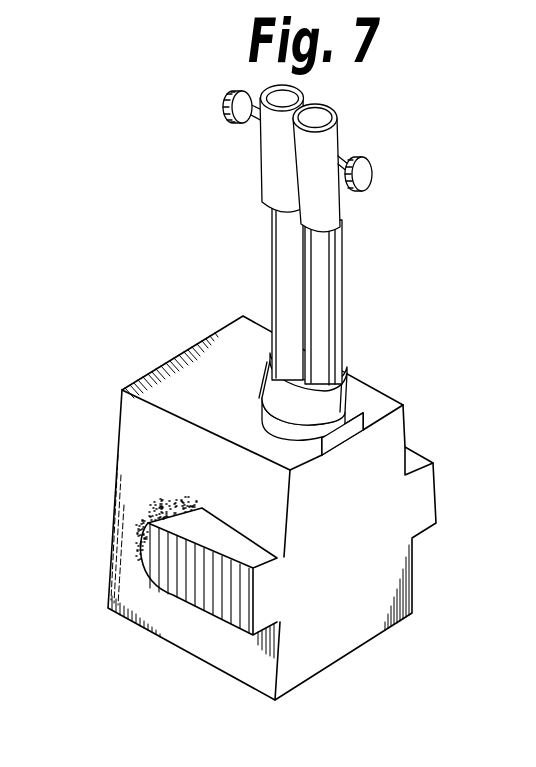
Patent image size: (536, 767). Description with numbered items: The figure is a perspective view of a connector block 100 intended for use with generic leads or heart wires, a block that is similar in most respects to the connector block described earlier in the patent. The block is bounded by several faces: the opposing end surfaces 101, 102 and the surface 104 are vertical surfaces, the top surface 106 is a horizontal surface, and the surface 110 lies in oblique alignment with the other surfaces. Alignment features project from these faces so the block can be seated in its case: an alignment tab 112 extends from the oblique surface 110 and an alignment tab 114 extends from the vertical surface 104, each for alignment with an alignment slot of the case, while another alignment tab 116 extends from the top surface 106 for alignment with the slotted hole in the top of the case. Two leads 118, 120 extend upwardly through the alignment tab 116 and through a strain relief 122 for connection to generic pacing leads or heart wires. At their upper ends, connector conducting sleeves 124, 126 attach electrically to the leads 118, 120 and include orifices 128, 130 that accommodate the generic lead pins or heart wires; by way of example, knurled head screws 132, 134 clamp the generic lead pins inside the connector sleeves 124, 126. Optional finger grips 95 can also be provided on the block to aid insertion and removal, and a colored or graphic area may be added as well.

The finger grips 95 is at (224, 612).
The connector block 100 is at (382, 207).
The end surface 101 is at (348, 533).
The end surface 102 is at (146, 438).
The surface 104 is at (380, 434).
The top surface 106 is at (178, 378).
The surface 110 is at (126, 490).
The alignment tab 112 is at (203, 592).
The alignment tab 114 is at (419, 498).
The alignment tab 116 is at (263, 385).
The lead 118 is at (283, 260).
The lead 120 is at (342, 305).
The strain relief 122 is at (368, 392).
The connector conducting sleeve 124 is at (273, 167).
The connector conducting sleeve 126 is at (340, 206).
The orifice 128 is at (279, 96).
The orifice 130 is at (317, 114).
The knurled head screw 132 is at (232, 110).
The knurled head screw 134 is at (367, 172).